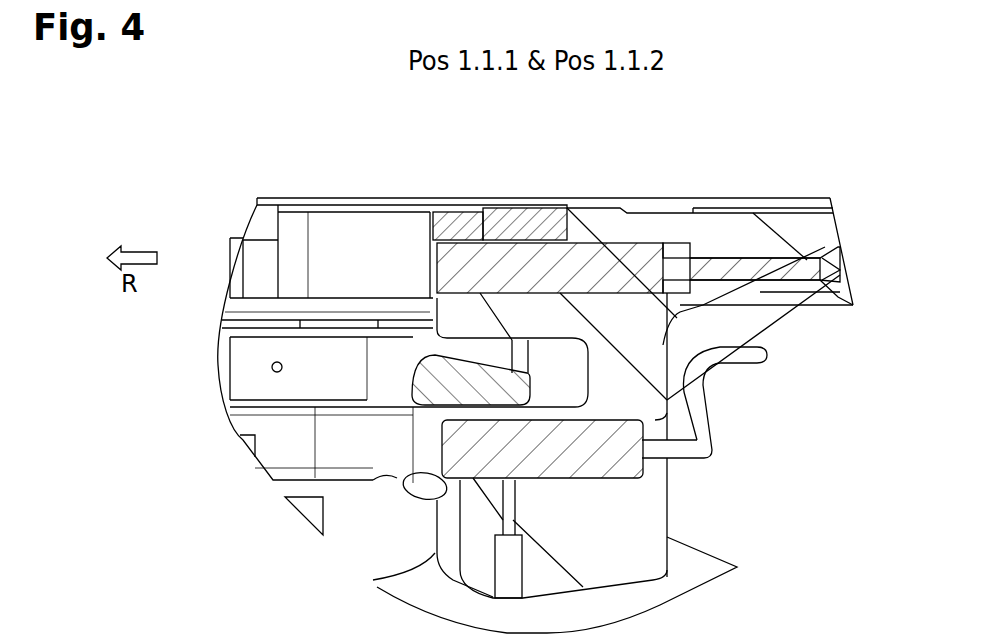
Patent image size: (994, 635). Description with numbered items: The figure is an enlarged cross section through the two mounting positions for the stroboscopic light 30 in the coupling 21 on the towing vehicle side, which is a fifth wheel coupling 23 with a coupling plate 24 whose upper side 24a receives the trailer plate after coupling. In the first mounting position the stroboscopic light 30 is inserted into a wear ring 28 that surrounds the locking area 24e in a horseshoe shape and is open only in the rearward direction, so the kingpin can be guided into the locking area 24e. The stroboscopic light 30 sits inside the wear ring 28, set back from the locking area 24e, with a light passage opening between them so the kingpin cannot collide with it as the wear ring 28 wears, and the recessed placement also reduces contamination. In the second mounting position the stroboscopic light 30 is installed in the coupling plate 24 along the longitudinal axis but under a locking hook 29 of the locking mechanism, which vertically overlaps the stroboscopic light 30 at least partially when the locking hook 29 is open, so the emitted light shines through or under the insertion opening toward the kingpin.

The coupling 21 is at (438, 419).
The fifth wheel coupling 23 is at (176, 341).
The coupling plate 24 is at (685, 203).
The upper side 24a is at (302, 198).
The locking area 24e is at (350, 240).
The wear ring 28 is at (453, 217).
The locking hook 29 is at (428, 388).
The stroboscopic light 30 is at (590, 257).